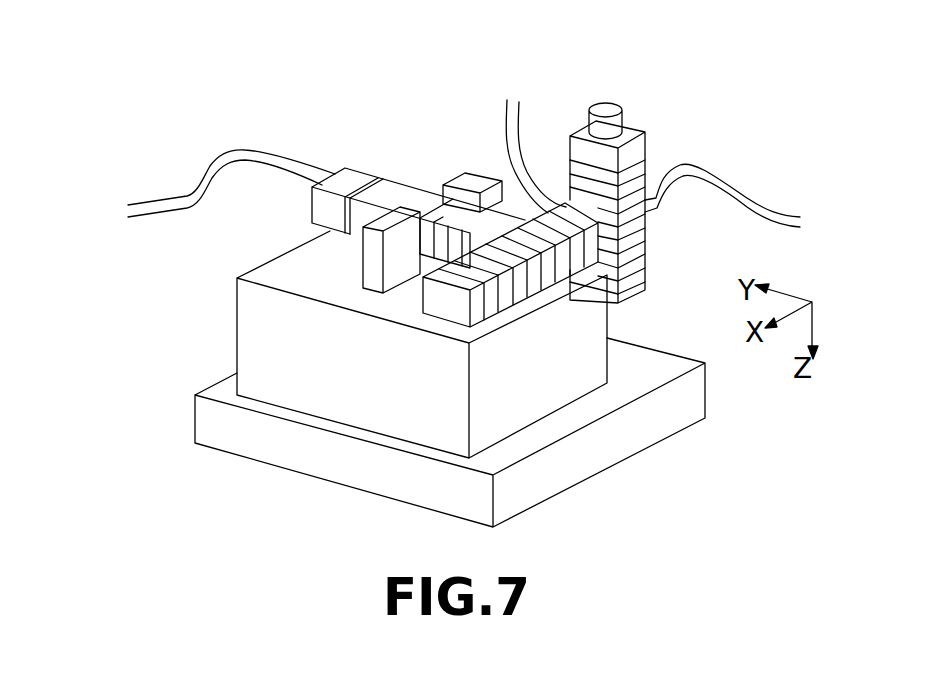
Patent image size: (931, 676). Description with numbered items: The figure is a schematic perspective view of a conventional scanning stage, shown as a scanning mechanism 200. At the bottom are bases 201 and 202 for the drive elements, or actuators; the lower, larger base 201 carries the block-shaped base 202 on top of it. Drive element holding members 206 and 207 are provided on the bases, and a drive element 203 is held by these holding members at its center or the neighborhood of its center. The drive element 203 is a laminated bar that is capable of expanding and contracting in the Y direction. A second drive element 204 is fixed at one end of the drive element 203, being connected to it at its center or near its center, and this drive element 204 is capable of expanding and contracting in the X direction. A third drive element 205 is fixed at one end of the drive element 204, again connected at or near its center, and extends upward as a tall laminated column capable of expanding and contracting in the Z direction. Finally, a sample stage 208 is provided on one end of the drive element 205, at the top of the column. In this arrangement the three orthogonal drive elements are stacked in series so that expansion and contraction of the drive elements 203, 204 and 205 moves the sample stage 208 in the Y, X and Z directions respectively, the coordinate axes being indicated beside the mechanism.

The scanning mechanism 200 is at (164, 139).
The base 201 is at (690, 398).
The base 202 is at (253, 332).
The drive element 203 is at (470, 207).
The drive element 204 is at (532, 275).
The drive element 205 is at (633, 242).
The drive element holding member 206 is at (388, 217).
The drive element holding member 207 is at (447, 177).
The sample stage 208 is at (627, 118).